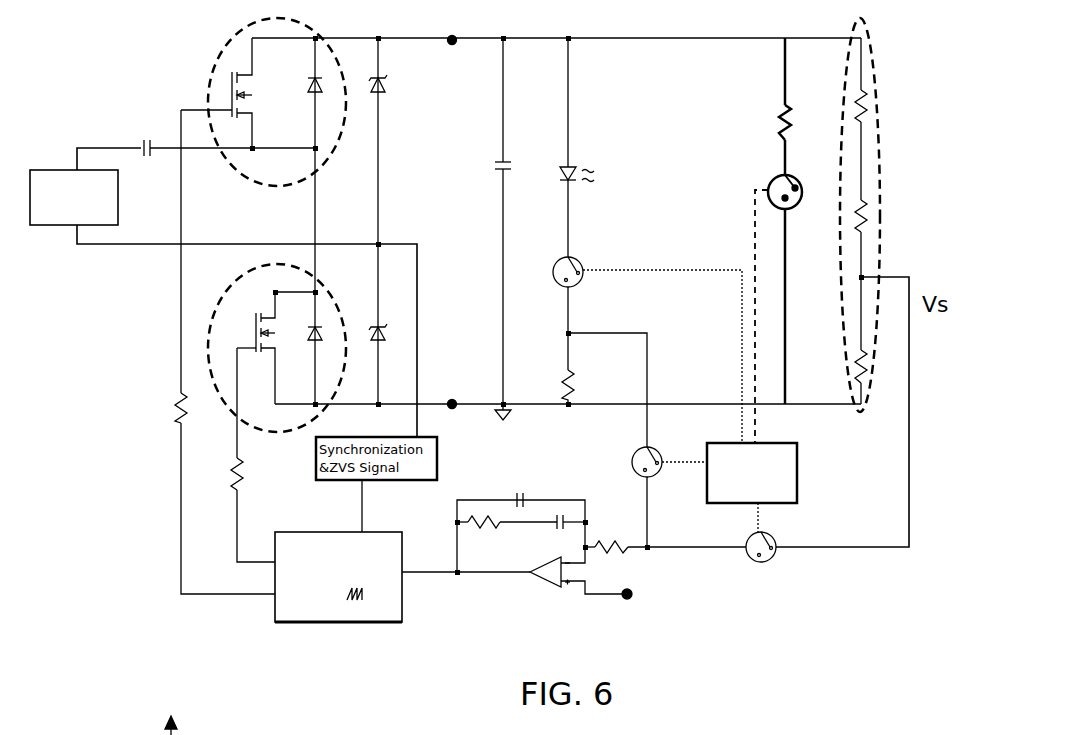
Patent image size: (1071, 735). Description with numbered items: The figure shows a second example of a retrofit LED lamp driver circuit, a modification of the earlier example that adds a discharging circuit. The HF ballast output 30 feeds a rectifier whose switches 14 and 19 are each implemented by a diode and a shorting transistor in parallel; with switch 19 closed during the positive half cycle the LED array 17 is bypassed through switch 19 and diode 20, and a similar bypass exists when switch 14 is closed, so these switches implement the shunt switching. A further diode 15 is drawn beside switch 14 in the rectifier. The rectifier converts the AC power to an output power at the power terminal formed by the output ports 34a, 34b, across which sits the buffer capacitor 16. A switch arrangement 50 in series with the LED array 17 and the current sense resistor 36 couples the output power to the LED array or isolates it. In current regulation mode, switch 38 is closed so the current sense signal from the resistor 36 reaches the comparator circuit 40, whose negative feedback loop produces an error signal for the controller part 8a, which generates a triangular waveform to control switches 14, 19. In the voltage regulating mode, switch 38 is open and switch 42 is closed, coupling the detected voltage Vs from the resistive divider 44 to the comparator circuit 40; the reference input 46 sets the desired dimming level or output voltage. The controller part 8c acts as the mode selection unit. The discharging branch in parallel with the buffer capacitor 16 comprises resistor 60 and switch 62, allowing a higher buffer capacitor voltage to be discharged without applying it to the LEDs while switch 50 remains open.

The HF ballast output 30 is at (45, 168).
The switch 14 is at (317, 38).
The zener diode 15 is at (381, 92).
The output port 34a is at (452, 40).
The buffer capacitor 16 is at (511, 163).
The LED array 17 is at (572, 164).
The switch arrangement 50 is at (577, 257).
The current sense resistor 36 is at (565, 378).
The switch 38 is at (632, 462).
The output port 34b is at (452, 404).
The resistor 60 is at (777, 117).
The switch 62 is at (772, 178).
The resistive divider 44 is at (840, 130).
The controller part 8c is at (797, 455).
The switch 42 is at (760, 562).
The comparator circuit 40 is at (505, 601).
The reference input 46 is at (632, 594).
The controller part 8a is at (330, 630).
The switch 19 is at (222, 312).
The diode 20 is at (386, 338).